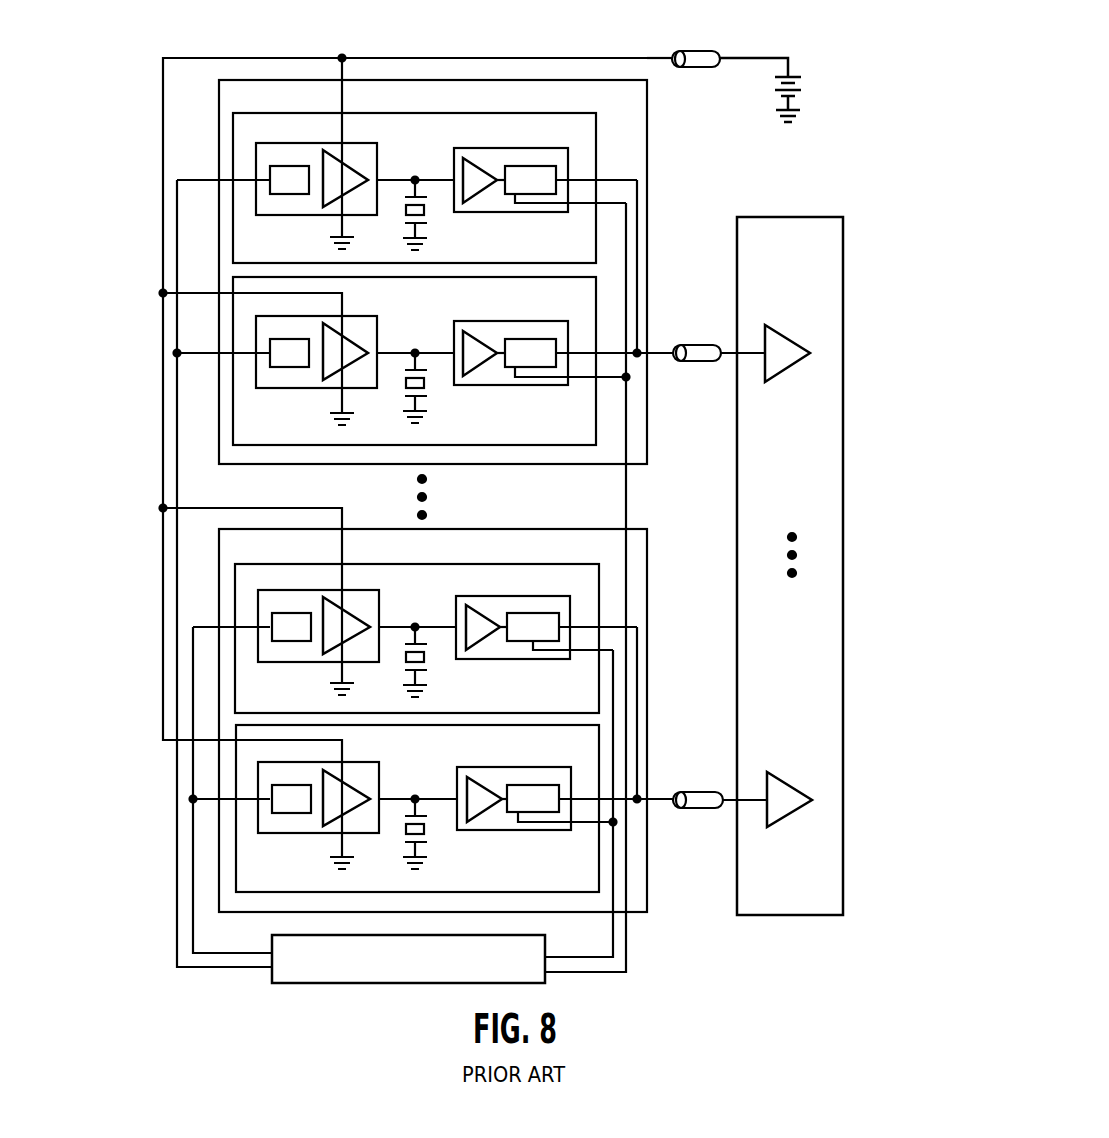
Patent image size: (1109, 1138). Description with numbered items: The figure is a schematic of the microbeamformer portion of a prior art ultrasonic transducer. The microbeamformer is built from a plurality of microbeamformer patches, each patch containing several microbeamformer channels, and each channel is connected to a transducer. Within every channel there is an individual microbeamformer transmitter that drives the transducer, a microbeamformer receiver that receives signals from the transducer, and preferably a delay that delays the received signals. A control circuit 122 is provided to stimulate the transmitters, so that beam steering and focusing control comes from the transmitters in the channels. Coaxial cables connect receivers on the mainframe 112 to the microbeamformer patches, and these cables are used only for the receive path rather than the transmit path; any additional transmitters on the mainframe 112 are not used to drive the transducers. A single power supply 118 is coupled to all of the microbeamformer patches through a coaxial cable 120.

The mainframe 112 is at (797, 917).
The power supply 118 is at (800, 108).
The coaxial cable 120 is at (703, 69).
The control circuit 122 is at (297, 970).